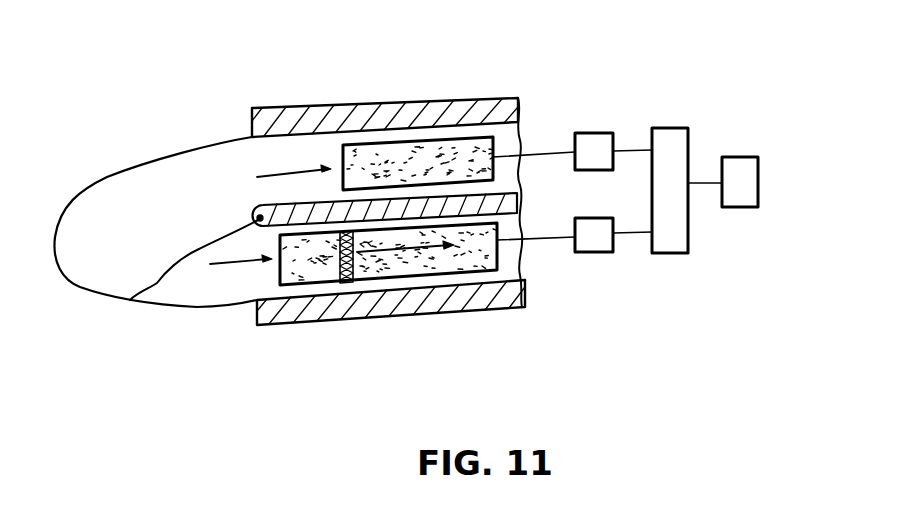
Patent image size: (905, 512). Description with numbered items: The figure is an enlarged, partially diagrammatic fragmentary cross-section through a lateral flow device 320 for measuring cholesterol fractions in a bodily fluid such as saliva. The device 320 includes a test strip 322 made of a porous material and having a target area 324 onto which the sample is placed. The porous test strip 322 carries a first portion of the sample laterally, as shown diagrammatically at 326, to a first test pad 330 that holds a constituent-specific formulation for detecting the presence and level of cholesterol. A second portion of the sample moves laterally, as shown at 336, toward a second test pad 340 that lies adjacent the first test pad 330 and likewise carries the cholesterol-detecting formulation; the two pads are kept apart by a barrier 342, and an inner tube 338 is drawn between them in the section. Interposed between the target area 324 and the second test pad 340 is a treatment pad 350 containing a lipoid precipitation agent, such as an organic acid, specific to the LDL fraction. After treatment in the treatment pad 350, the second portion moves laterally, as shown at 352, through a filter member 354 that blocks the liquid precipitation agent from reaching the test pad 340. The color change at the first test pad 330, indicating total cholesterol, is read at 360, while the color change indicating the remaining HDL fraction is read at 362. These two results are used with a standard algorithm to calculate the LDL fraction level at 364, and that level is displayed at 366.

The lateral flow device 320 is at (258, 104).
The test strip 322 is at (165, 155).
The target area 324 is at (160, 243).
The lateral removal of first sample portion 326 is at (303, 168).
The first test pad 330 is at (403, 148).
The lateral movement of second sample portion 336 is at (235, 265).
The inner dividing tube 338 is at (385, 209).
The second test pad 340 is at (427, 268).
The barrier 342 is at (140, 300).
The treatment pad 350 is at (300, 285).
The lateral movement of treated sample portion 352 is at (432, 253).
The filter member 354 is at (348, 284).
The total cholesterol reading 360 is at (590, 133).
The HDL fraction reading 362 is at (595, 254).
The LDL calculation 364 is at (673, 128).
The display 366 is at (745, 157).